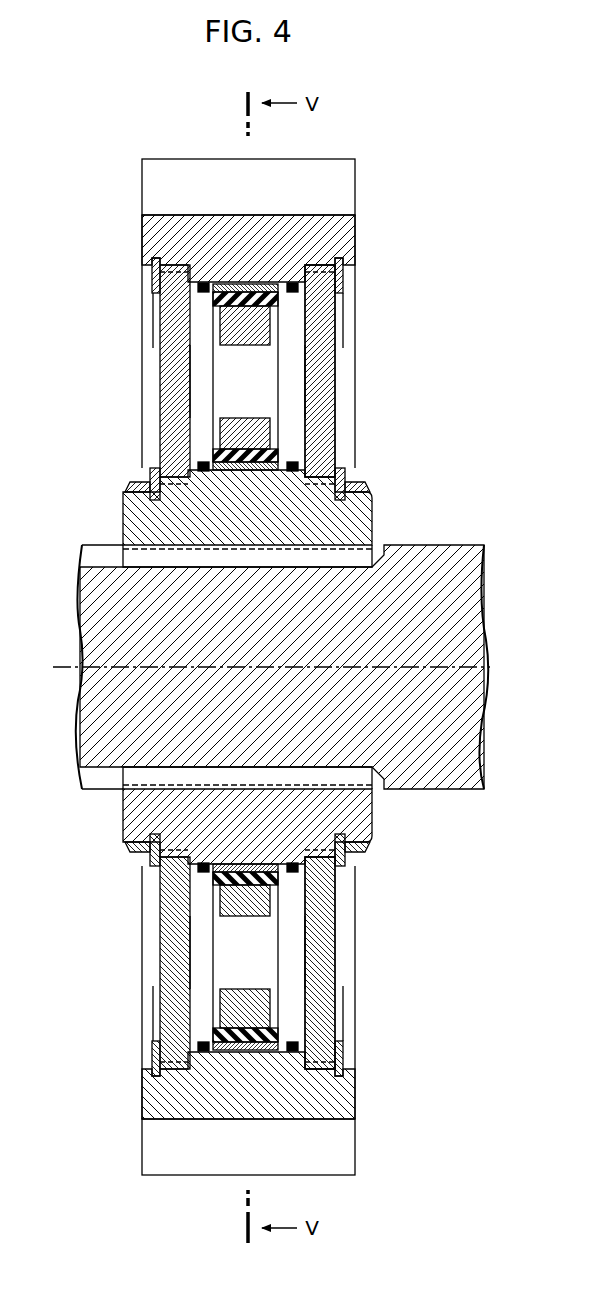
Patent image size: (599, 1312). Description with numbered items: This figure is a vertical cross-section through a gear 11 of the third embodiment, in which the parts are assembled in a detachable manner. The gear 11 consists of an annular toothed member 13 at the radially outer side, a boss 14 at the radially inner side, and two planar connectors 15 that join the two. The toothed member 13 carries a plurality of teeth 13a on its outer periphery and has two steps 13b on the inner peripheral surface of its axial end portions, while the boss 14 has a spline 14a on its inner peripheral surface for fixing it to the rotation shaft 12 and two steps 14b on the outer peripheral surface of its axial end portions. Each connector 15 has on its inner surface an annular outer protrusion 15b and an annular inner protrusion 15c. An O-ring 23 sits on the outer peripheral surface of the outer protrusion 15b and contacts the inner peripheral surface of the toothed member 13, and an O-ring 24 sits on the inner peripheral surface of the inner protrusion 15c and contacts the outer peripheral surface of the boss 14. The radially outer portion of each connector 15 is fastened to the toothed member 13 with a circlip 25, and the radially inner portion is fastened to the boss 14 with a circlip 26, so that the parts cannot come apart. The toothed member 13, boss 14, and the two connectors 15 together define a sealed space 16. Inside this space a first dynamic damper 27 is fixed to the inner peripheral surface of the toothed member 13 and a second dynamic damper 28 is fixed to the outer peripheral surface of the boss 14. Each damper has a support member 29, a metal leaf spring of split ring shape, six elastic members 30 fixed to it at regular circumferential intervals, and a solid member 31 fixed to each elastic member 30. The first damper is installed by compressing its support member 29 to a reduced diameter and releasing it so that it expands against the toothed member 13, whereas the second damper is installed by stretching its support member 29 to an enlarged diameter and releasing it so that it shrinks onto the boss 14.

The gear 11 is at (442, 291).
The rotation shaft 12 is at (443, 540).
The toothed member 13 is at (362, 219).
The teeth 13a is at (312, 172).
The steps 13b is at (182, 265).
The boss 14 is at (383, 510).
The spline 14a is at (140, 556).
The steps 14b is at (150, 482).
The planar connector 15 is at (152, 398).
The outer protrusion 15b is at (195, 306).
The inner protrusion 15c is at (206, 447).
The sealed space 16 is at (193, 380).
The O-ring 23 is at (203, 283).
The O-ring 24 is at (203, 472).
The circlip 25 is at (152, 272).
The circlip 26 is at (127, 492).
The first dynamic damper 27 is at (333, 380).
The second dynamic damper 28 is at (288, 384).
The support member 29 is at (250, 284).
The elastic members 30 is at (240, 295).
The solid member 31 is at (245, 667).